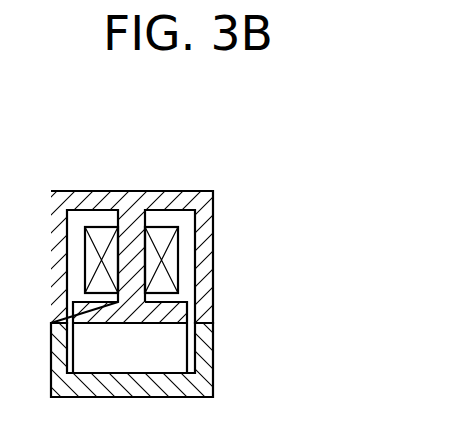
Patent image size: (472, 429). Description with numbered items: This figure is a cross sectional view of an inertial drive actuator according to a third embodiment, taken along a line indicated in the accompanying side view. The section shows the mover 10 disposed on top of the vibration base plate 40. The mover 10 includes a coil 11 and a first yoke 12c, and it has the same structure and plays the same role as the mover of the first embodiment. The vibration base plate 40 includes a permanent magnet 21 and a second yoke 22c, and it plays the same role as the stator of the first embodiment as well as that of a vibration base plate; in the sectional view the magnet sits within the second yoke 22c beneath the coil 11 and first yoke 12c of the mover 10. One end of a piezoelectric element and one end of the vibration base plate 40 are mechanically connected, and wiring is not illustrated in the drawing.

The mover 10 is at (202, 282).
The coil 11 is at (174, 256).
The first yoke 12c is at (204, 208).
The permanent magnet 21 is at (173, 340).
The second yoke 22c is at (207, 372).
The vibration base plate 40 is at (202, 295).